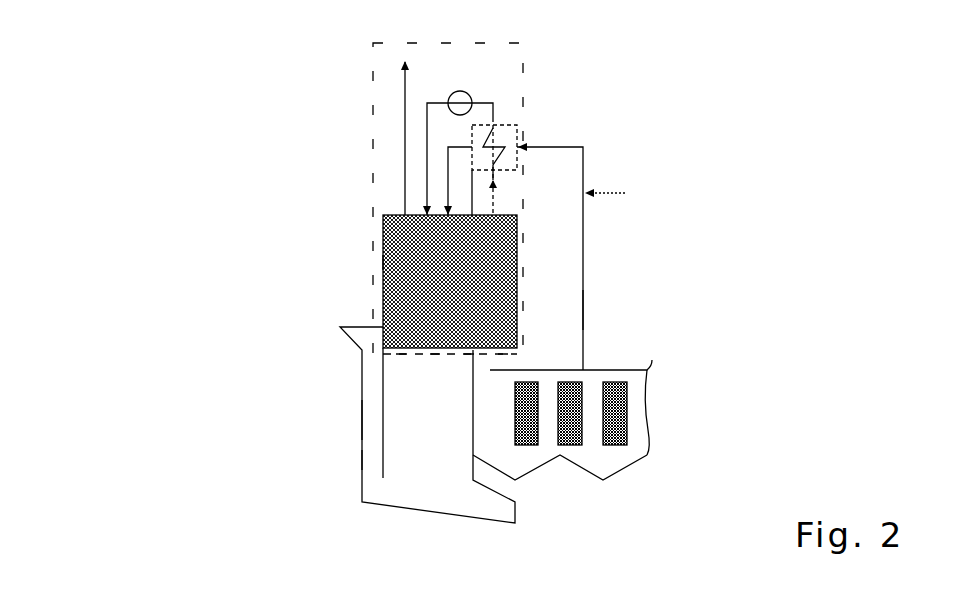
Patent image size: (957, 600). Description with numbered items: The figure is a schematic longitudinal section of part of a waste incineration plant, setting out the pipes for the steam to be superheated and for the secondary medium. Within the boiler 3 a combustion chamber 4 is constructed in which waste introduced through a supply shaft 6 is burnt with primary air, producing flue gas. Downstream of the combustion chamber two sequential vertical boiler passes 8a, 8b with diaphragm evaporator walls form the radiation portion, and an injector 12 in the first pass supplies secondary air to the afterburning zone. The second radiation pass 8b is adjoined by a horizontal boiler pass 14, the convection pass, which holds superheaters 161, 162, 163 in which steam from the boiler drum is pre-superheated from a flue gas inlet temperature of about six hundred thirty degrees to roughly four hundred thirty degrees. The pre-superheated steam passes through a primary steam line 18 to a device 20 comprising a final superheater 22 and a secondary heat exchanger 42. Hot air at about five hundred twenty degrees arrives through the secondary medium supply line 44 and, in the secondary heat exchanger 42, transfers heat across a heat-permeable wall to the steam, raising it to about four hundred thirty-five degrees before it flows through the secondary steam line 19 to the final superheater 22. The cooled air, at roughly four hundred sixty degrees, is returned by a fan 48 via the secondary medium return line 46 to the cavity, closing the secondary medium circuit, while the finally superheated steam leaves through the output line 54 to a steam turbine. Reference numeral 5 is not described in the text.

The boiler 3 is at (383, 310).
The combustion chamber 4 is at (447, 497).
The insulation 5 is at (385, 356).
The supply shaft 6 is at (370, 453).
The first vertical boiler pass 8a is at (400, 413).
The second vertical boiler pass 8b is at (493, 370).
The injector 12 is at (470, 360).
The horizontal boiler pass 14 is at (638, 423).
The primary steam line 18 is at (582, 307).
The secondary steam line 19 is at (448, 178).
The device 20 is at (373, 148).
The final superheater 22 is at (383, 262).
The secondary heat exchanger 42 is at (515, 137).
The secondary medium supply line 44 is at (495, 195).
The secondary medium return line 46 is at (427, 163).
The fan 48 is at (472, 97).
The output line 54 is at (405, 107).
The superheater 161 is at (525, 447).
The superheater 162 is at (572, 447).
The superheater 163 is at (617, 447).